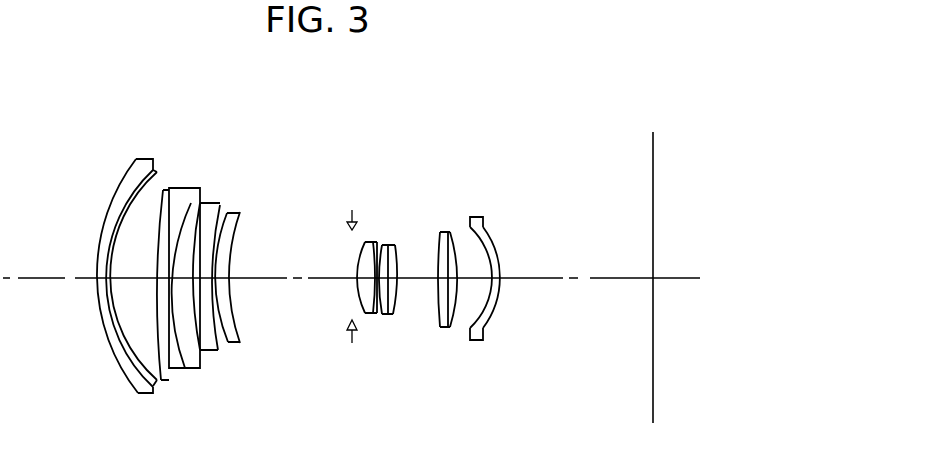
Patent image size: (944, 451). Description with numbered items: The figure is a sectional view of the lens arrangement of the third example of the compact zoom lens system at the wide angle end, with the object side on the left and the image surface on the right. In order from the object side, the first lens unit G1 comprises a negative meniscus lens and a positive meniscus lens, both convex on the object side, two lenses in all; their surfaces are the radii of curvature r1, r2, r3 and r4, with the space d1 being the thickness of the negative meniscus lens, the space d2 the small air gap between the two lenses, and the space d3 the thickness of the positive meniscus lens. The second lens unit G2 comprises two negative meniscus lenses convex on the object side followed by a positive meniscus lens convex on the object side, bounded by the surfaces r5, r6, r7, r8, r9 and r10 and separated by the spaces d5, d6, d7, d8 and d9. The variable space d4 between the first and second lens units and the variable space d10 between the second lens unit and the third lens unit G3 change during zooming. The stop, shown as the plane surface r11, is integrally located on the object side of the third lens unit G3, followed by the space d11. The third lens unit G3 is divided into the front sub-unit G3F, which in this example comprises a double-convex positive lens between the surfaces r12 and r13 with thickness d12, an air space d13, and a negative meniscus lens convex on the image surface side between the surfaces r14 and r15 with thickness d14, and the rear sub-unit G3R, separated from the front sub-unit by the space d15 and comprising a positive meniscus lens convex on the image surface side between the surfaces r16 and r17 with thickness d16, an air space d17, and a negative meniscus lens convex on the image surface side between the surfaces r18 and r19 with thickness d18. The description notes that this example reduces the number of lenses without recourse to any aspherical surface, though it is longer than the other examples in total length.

The first lens unit G1 is at (167, 115).
The second lens unit G2 is at (252, 115).
The third lens unit G3 is at (493, 83).
The front sub-unit of the third lens unit G3F is at (400, 117).
The rear sub-unit of the third lens unit G3R is at (493, 117).
The radius of curvature of first lens surface r1 is at (125, 182).
The radius of curvature of second lens surface r2 is at (132, 175).
The radius of curvature of third lens surface r3 is at (160, 170).
The radius of curvature of fourth lens surface r4 is at (163, 187).
The radius of curvature of fifth lens surface r5 is at (177, 202).
The radius of curvature of sixth lens surface r6 is at (193, 207).
The radius of curvature of seventh lens surface r7 is at (202, 205).
The radius of curvature of eighth lens surface r8 is at (217, 208).
The radius of curvature of ninth lens surface r9 is at (228, 215).
The radius of curvature of tenth lens surface r10 is at (242, 220).
The stop surface r11 is at (347, 225).
The radius of curvature of twelfth lens surface r12 is at (365, 242).
The radius of curvature of thirteenth lens surface r13 is at (382, 245).
The radius of curvature of fourteenth lens surface r14 is at (388, 245).
The radius of curvature of fifteenth lens surface r15 is at (395, 245).
The radius of curvature of sixteenth lens surface r16 is at (440, 232).
The radius of curvature of seventeenth lens surface r17 is at (450, 232).
The radius of curvature of eighteenth lens surface r18 is at (475, 217).
The radius of curvature of nineteenth lens surface r19 is at (488, 222).
The space between first and second lens surfaces d1 is at (98, 288).
The space between second and third lens surfaces d2 is at (102, 285).
The space between third and fourth lens surfaces d3 is at (133, 294).
The space between fourth and fifth lens surfaces d4 is at (157, 383).
The space between fifth and sixth lens surfaces d5 is at (188, 368).
The space between sixth and seventh lens surfaces d6 is at (193, 345).
The space between seventh and eighth lens surfaces d7 is at (207, 353).
The space between eighth and ninth lens surfaces d8 is at (217, 333).
The space between ninth and tenth lens surfaces d9 is at (233, 303).
The space between tenth and eleventh lens surfaces d10 is at (292, 297).
The space between stop and twelfth lens surface d11 is at (363, 307).
The space between twelfth and thirteenth lens surfaces d12 is at (373, 307).
The space between thirteenth and fourteenth lens surfaces d13 is at (380, 293).
The space between fourteenth and fifteenth lens surfaces d14 is at (390, 280).
The space between fifteenth and sixteenth lens surfaces d15 is at (420, 294).
The space between sixteenth and seventeenth lens surfaces d16 is at (447, 327).
The space between seventeenth and eighteenth lens surfaces d17 is at (473, 294).
The space between eighteenth and nineteenth lens surfaces d18 is at (493, 305).